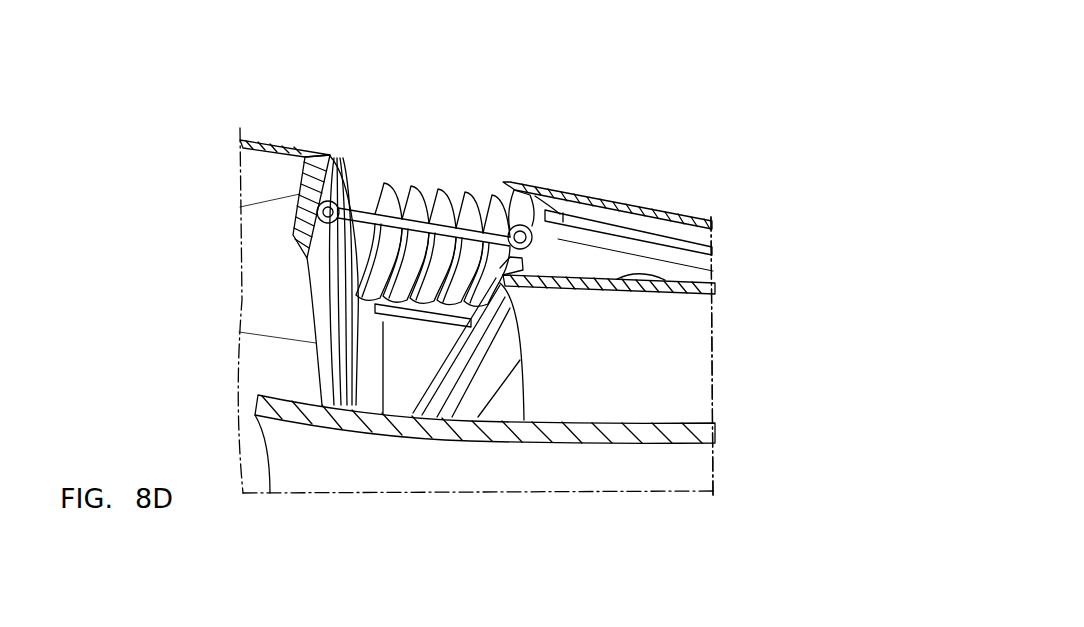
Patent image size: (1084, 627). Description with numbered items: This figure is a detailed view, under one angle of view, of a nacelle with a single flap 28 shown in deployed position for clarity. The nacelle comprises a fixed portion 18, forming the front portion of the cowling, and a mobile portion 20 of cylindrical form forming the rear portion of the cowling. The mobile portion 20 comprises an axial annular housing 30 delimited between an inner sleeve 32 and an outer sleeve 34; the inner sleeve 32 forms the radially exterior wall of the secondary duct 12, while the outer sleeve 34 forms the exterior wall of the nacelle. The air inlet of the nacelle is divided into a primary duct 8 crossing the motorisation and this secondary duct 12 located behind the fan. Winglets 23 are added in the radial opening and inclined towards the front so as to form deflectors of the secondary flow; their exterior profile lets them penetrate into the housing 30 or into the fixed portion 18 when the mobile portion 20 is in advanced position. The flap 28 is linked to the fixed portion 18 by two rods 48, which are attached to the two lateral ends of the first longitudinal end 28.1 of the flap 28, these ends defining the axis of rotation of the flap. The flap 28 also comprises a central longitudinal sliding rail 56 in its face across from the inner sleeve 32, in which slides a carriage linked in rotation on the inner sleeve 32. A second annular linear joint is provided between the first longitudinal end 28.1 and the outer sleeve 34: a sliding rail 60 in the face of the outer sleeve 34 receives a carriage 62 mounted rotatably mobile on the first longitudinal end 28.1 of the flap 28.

The primary duct 8 is at (302, 465).
The secondary duct 12 is at (687, 393).
The fixed portion 18 is at (277, 135).
The mobile portion 20 is at (698, 200).
The winglets 23 is at (386, 181).
The flap 28 is at (503, 422).
The first longitudinal end 28.1 is at (521, 200).
The axial annular housing 30 is at (690, 268).
The inner sleeve 32 is at (690, 287).
The outer sleeve 34 is at (600, 199).
The rods 48 is at (418, 213).
The central longitudinal sliding rail 56 is at (448, 397).
The sliding rail 60 is at (636, 226).
The carriage 62 is at (558, 208).